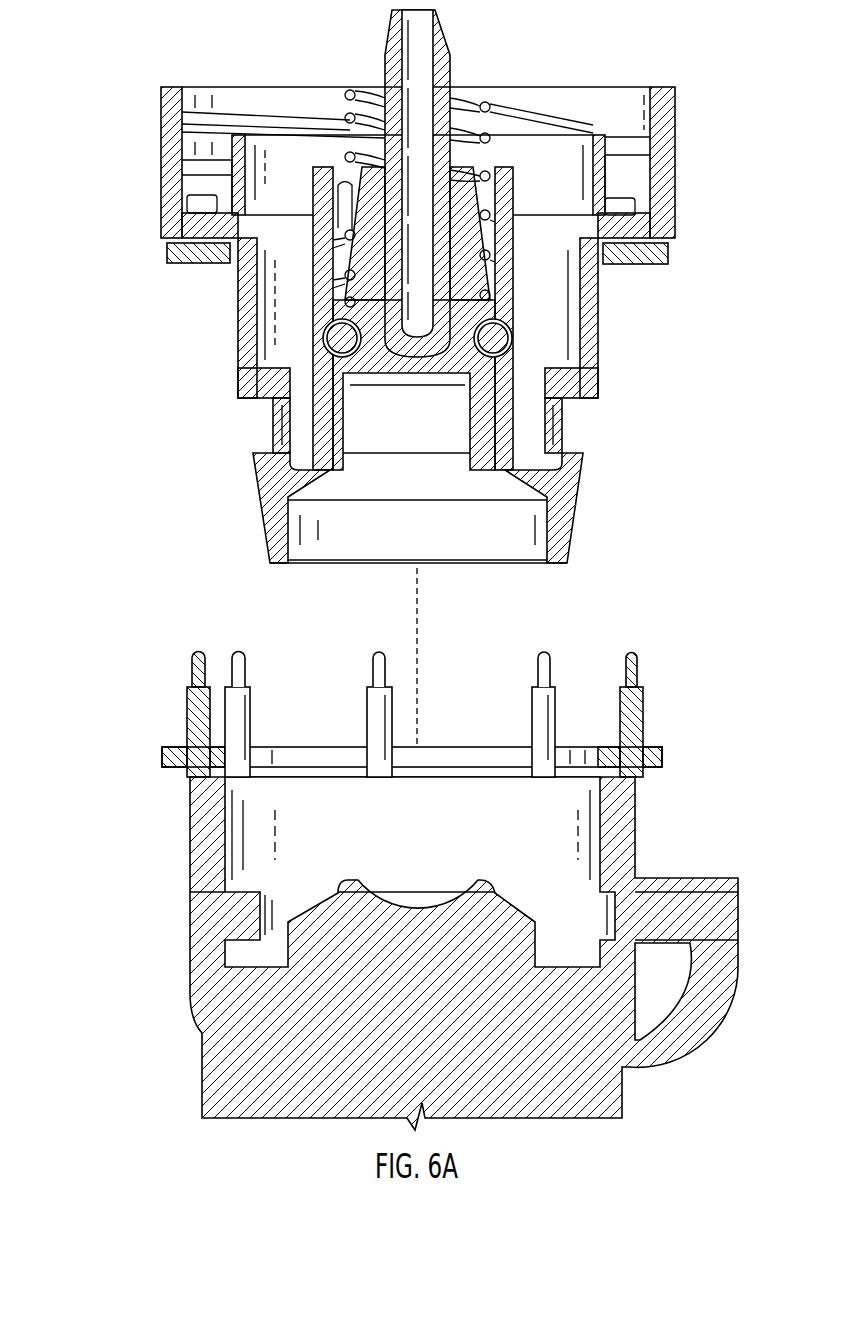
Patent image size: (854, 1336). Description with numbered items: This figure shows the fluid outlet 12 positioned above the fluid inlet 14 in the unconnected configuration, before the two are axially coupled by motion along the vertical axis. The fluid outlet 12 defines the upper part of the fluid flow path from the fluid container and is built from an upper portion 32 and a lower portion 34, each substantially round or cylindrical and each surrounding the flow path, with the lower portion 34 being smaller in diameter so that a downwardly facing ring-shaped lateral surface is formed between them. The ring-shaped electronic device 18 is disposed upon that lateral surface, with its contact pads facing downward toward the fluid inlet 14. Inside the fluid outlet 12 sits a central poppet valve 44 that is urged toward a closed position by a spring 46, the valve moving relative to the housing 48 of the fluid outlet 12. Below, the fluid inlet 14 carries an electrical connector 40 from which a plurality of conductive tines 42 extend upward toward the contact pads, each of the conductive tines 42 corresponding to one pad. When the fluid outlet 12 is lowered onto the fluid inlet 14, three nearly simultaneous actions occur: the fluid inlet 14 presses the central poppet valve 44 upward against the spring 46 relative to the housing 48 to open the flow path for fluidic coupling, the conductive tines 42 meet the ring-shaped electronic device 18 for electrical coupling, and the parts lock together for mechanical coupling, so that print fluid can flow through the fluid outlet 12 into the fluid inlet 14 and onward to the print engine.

The fluid outlet 12 is at (394, 286).
The fluid inlet 14 is at (403, 882).
The ring-shaped electronic device 18 is at (650, 256).
The upper portion 32 is at (675, 150).
The lower portion 34 is at (598, 338).
The electrical connector 40 is at (663, 757).
The conductive tines 42 is at (640, 665).
The central poppet valve 44 is at (370, 340).
The spring 46 is at (345, 275).
The housing 48 is at (177, 112).